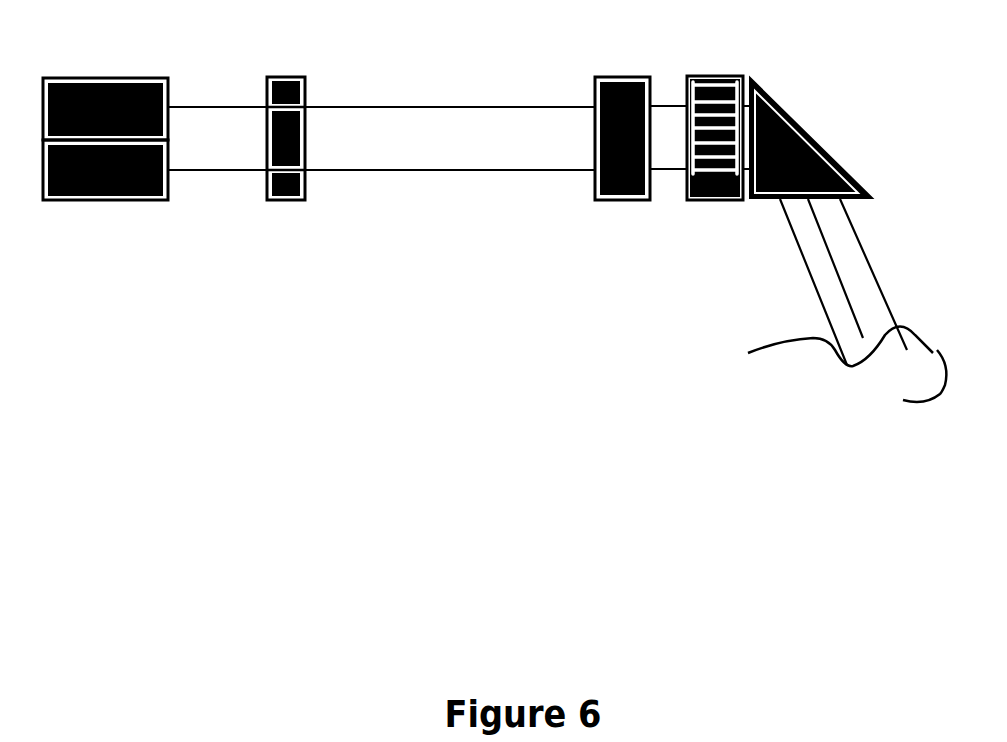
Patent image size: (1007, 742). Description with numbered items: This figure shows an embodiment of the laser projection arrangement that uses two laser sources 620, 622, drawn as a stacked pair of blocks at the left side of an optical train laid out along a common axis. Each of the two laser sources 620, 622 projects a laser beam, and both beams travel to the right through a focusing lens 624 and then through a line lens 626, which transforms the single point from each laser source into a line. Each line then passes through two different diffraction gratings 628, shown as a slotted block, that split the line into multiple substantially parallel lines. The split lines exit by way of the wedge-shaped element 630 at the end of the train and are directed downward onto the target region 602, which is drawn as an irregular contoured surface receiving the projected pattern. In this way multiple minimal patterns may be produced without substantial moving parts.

The tissue / treatment target 602 is at (847, 318).
The laser source 620 is at (103, 100).
The laser source 622 is at (138, 201).
The focusing lens 624 is at (287, 78).
The line lens 626 is at (627, 165).
The diffraction gratings 628 is at (708, 100).
The prism 630 is at (813, 157).